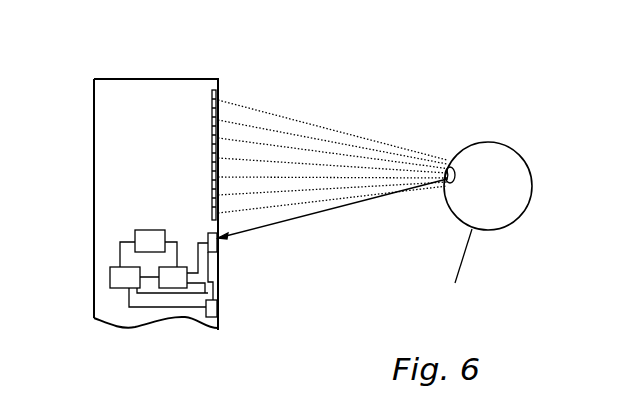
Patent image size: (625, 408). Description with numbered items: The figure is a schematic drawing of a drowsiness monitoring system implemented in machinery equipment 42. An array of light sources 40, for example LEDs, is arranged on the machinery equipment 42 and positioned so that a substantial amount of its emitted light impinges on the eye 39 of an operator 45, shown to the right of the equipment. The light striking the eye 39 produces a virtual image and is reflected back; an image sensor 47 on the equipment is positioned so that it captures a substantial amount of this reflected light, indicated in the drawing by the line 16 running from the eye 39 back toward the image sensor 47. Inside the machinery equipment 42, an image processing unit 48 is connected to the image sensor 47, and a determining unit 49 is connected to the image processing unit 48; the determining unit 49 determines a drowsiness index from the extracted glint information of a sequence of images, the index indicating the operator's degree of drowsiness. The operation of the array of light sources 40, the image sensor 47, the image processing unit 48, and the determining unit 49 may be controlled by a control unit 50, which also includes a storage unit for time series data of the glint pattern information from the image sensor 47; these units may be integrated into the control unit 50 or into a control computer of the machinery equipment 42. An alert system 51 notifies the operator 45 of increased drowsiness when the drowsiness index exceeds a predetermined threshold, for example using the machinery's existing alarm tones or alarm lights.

The machinery equipment 42 is at (130, 78).
The array of light sources 40 is at (216, 88).
The light rays / line of sight 16 is at (343, 208).
The image sensor 47 is at (218, 247).
The alert system 51 is at (217, 310).
The determining unit 49 is at (153, 238).
The control unit 50 is at (113, 278).
The image processing unit 48 is at (175, 284).
The operator 45 is at (520, 163).
The eye 39 is at (450, 167).